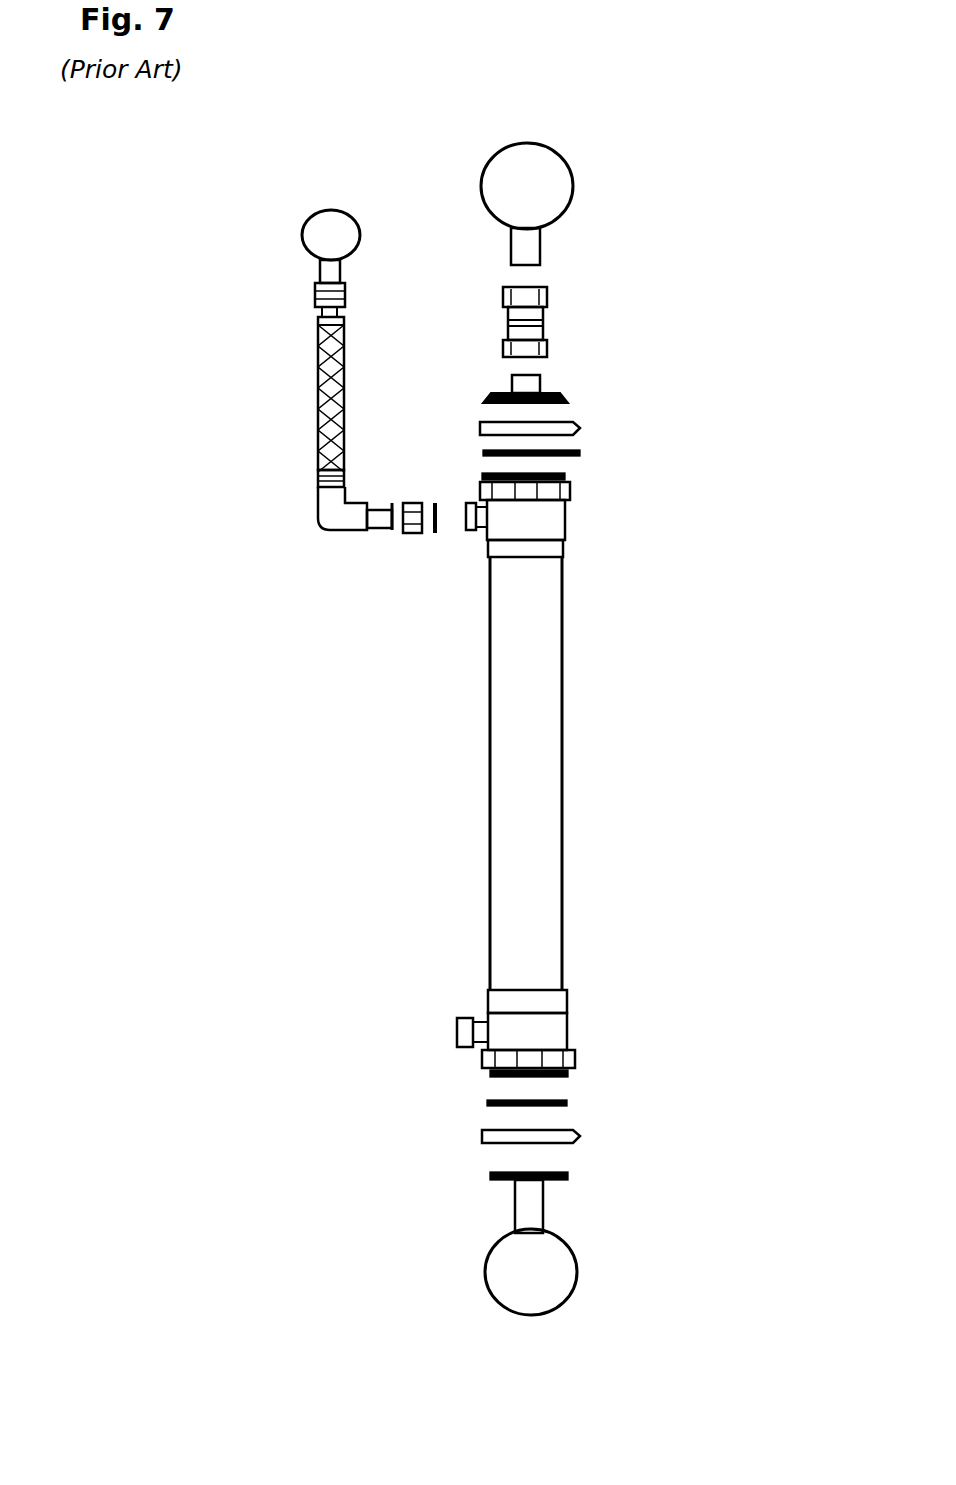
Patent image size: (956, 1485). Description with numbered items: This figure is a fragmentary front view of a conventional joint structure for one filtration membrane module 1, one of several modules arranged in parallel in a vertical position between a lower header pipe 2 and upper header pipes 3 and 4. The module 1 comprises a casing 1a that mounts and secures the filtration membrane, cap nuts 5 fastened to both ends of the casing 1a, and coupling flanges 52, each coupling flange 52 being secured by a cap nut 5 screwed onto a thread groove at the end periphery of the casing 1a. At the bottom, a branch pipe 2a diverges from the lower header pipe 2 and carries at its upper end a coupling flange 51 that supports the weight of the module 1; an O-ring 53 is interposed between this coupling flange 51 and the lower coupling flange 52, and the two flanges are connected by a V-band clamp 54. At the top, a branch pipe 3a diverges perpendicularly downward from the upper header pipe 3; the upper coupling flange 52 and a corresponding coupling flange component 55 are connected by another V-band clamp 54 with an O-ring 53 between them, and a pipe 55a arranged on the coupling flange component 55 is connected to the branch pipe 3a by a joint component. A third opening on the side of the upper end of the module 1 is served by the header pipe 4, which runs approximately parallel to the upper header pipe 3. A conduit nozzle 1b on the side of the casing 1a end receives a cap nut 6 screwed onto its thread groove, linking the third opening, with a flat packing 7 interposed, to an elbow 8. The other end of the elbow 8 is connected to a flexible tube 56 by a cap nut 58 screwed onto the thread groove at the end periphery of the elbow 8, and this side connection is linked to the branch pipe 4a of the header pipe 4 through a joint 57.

The filtration membrane module 1 is at (568, 800).
The casing 1a is at (566, 528).
The conduit nozzle 1b is at (472, 535).
The lower header pipe 2 is at (488, 1290).
The branch pipe 2a is at (514, 1217).
The upper header pipe 3 is at (565, 160).
The branch pipe 3a is at (541, 245).
The header pipe 4 is at (310, 215).
The branch pipe 4a is at (345, 272).
The cap nut 5 is at (571, 490).
The coupling flange 51 is at (492, 1175).
The coupling flange 52 is at (485, 476).
The O-ring 53 is at (581, 454).
The V-band clamp 54 is at (581, 428).
The coupling flange component 55 is at (568, 398).
The pipe 55a is at (512, 388).
The flexible tube 56 is at (318, 387).
The joint 57 is at (316, 292).
The cap nut 58 is at (318, 478).
The cap nut 6 is at (404, 532).
The flat packing 7 is at (431, 535).
The elbow 8 is at (320, 520).